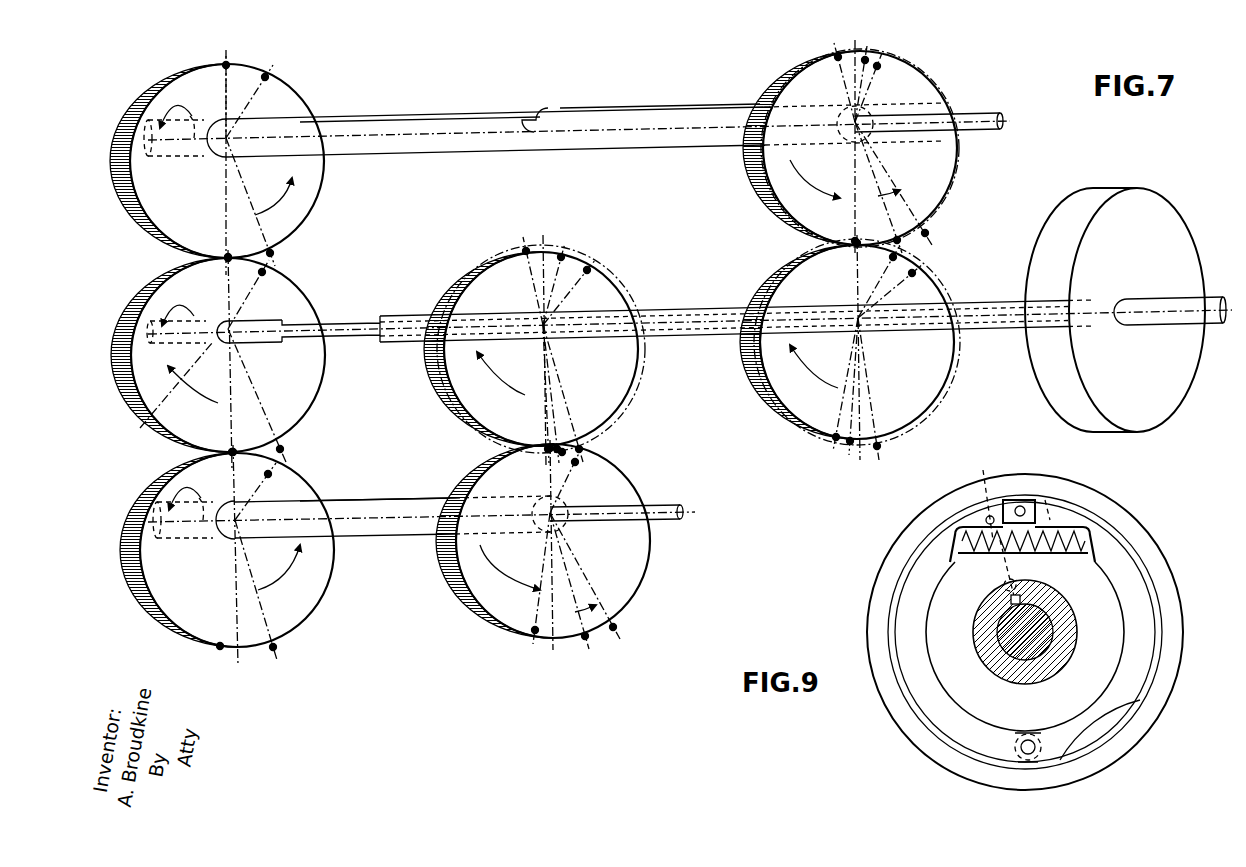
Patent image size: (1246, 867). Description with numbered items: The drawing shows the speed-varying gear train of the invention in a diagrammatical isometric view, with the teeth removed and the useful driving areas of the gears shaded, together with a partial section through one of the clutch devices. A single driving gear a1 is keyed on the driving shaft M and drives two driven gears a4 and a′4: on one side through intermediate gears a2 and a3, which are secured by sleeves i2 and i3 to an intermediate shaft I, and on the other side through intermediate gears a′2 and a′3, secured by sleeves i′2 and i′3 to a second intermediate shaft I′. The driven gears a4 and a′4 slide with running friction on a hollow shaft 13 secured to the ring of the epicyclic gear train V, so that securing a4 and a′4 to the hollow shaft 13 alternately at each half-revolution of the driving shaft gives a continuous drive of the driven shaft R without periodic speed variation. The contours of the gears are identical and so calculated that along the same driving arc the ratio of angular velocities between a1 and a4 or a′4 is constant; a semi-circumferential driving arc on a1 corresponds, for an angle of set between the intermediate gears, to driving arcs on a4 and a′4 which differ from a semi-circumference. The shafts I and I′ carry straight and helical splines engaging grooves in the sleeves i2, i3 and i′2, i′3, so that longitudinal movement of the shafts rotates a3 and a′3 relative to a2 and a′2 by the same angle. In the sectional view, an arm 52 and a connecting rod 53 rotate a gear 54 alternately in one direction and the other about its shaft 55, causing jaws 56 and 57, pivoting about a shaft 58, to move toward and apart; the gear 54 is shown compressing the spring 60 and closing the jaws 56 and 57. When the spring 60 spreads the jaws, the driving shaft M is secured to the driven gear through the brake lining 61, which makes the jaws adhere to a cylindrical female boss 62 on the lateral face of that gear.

In FIG. 7, the intermediate gear a2 is at (178, 95).
In FIG. 7, the driving gear a1 is at (180, 295).
In FIG. 7, the intermediate gear a′2 is at (183, 482).
In FIG. 7, the driven gear a′4 is at (490, 290).
In FIG. 7, the intermediate gear a′3 is at (612, 565).
In FIG. 7, the intermediate gear a3 is at (900, 98).
In FIG. 7, the driven gear a4 is at (800, 282).
In FIG. 7, the intermediate shaft I is at (975, 112).
In FIG. 7, the second intermediate shaft I′ is at (668, 505).
In FIG. 7, the hollow shaft 13 is at (690, 312).
In FIG. 7, the sleeve i2 is at (383, 120).
In FIG. 7, the sleeve i3 is at (598, 118).
In FIG. 7, the sleeve i′2 is at (345, 498).
In FIG. 7, the sleeve i′3 is at (400, 498).
In FIG. 7, the epicyclic gear train V is at (1112, 184).
In FIG. 7, the driven shaft R is at (1163, 305).
In FIG. 7, the driving shaft M is at (142, 426).
In FIG. 9, the driving shaft M is at (1000, 633).
In FIG. 9, the arm 52 is at (1008, 570).
In FIG. 9, the connecting rod 53 is at (984, 478).
In FIG. 9, the gear 54 is at (1080, 494).
In FIG. 9, the shaft 55 is at (1030, 500).
In FIG. 9, the jaw 56 is at (904, 602).
In FIG. 9, the jaw 57 is at (1125, 573).
In FIG. 9, the shaft 58 is at (1022, 752).
In FIG. 9, the spring 60 is at (1092, 540).
In FIG. 9, the brake lining 61 is at (1095, 745).
In FIG. 9, the cylindrical female boss 62 is at (906, 722).